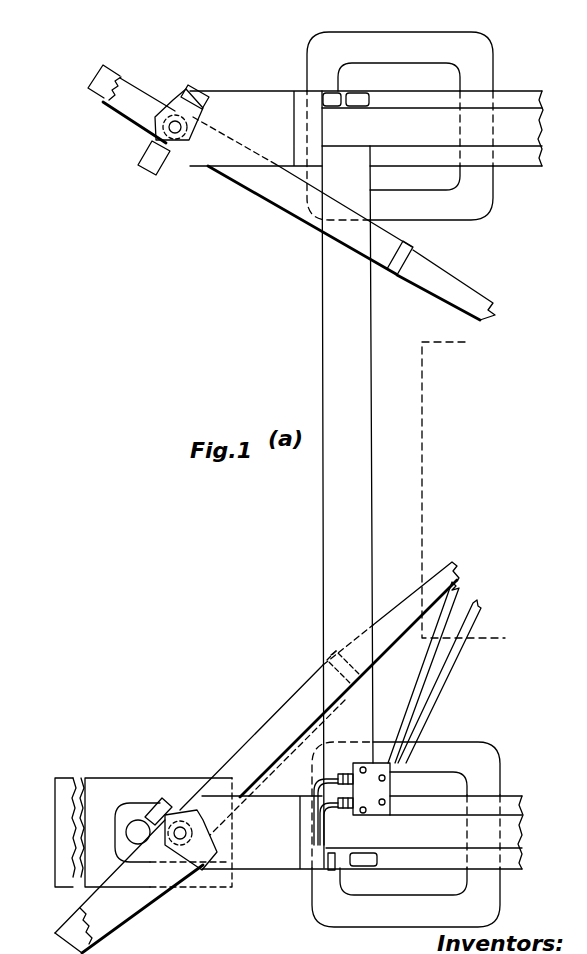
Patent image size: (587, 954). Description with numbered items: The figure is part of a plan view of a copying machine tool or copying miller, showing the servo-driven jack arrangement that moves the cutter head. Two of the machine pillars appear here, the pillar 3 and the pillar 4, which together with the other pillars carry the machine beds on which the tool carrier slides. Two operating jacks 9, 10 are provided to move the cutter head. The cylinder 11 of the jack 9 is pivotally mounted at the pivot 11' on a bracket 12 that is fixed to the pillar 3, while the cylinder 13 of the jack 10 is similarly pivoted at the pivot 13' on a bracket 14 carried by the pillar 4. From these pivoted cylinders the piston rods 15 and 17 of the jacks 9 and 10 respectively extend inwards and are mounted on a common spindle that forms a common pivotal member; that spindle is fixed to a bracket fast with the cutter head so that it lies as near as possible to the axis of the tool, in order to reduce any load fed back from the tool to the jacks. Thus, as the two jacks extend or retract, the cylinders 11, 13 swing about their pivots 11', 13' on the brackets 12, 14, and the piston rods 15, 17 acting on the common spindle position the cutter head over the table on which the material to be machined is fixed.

The machine pillar 3 is at (441, 757).
The machine pillar 4 is at (476, 60).
The operating jack 9 is at (120, 907).
The operating jack 10 is at (135, 109).
The cylinder 11 is at (319, 686).
The pivot 11' is at (181, 804).
The bracket 12 is at (281, 842).
The cylinder 13 is at (303, 196).
The pivot 13' is at (173, 148).
The bracket 14 is at (258, 104).
The piston rod 15 is at (380, 658).
The piston rod 17 is at (442, 289).